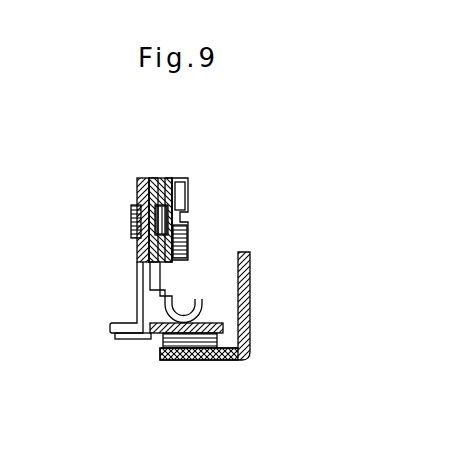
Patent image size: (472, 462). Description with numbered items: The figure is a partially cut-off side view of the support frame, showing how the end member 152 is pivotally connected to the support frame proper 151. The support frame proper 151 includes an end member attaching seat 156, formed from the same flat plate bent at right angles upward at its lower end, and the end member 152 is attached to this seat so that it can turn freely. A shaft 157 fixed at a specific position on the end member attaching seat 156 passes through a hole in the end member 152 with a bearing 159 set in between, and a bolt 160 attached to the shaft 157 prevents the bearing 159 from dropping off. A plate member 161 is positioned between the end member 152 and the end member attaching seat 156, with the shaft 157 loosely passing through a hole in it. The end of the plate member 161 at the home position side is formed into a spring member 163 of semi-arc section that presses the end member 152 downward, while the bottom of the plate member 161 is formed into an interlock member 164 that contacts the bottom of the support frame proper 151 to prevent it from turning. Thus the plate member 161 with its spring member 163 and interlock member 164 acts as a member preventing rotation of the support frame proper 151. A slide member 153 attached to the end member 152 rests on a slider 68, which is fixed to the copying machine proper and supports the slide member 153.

The slider 68 is at (245, 290).
The support frame proper 151 is at (113, 323).
The end member 152 is at (157, 171).
The slide member 153 is at (190, 360).
The end member attaching seat 156 is at (137, 192).
The shaft 157 is at (133, 222).
The bearing 159 is at (165, 183).
The bolt 160 is at (188, 201).
The plate member 161 is at (148, 180).
The spring member 163 is at (207, 311).
The interlock member 164 is at (127, 340).